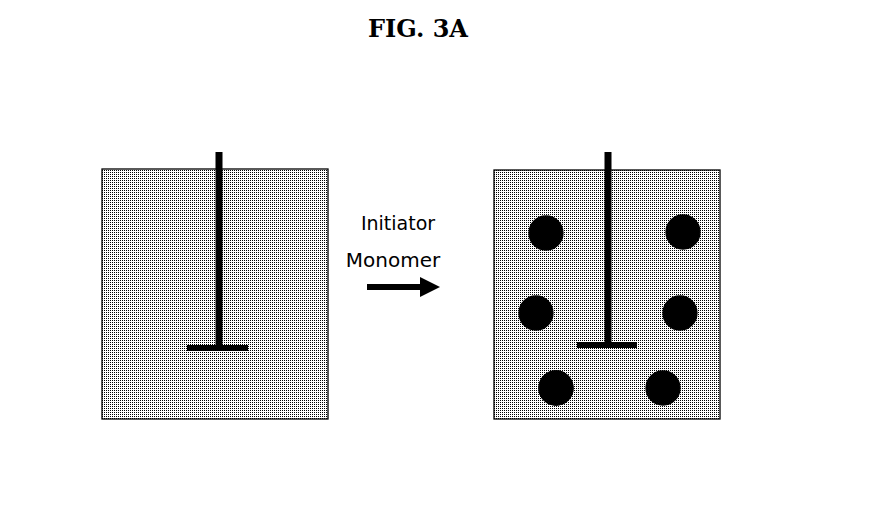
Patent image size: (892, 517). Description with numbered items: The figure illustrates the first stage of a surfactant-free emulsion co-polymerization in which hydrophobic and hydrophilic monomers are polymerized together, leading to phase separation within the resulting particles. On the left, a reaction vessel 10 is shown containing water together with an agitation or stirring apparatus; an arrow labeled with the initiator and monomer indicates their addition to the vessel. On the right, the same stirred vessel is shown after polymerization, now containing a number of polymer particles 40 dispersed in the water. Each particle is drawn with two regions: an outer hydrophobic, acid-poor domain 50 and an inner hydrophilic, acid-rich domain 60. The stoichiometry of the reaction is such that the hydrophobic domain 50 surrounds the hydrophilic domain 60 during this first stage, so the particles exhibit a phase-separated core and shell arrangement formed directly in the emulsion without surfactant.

The reaction vessel 10 is at (143, 419).
The polymer particles 40 is at (682, 383).
The hydrophobic (acid-poor) domain 50 is at (548, 404).
The hydrophilic (acid-rich) domain 60 is at (567, 403).